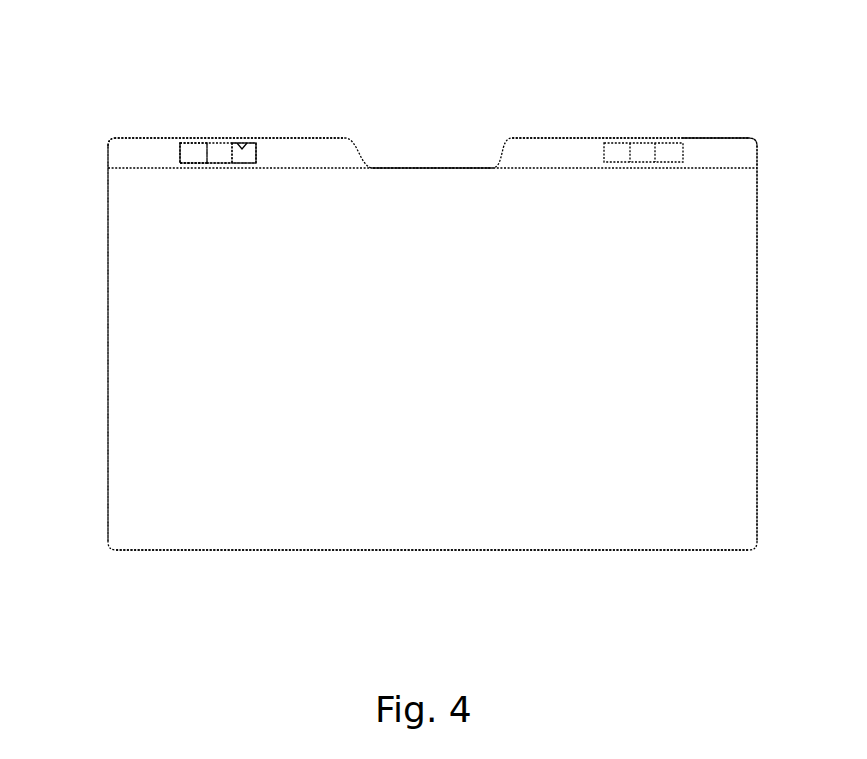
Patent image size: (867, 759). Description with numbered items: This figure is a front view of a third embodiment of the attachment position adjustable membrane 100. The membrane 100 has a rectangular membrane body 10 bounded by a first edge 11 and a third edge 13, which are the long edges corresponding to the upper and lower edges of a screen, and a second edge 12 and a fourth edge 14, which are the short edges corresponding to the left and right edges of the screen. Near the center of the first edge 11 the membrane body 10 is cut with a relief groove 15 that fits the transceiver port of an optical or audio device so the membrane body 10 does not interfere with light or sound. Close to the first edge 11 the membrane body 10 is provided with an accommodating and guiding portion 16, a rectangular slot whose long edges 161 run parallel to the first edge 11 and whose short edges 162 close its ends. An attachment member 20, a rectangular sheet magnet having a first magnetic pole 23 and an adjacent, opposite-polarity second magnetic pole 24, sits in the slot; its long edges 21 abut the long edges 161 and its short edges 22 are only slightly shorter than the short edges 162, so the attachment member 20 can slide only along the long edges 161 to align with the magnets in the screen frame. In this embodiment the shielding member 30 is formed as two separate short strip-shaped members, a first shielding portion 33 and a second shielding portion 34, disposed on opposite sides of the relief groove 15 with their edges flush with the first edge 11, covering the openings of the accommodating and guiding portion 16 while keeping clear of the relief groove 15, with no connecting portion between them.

The attachment position adjustable membrane 100 is at (440, 37).
The membrane body 10 is at (434, 477).
The first edge 11 is at (590, 147).
The second edge 12 is at (757, 315).
The third edge 13 is at (258, 550).
The fourth edge 14 is at (108, 383).
The relief groove 15 is at (430, 167).
The accommodating and guiding portion 16 is at (245, 142).
The long edges of accommodating and guiding portion 161 is at (232, 142).
The short edges of accommodating and guiding portion 162 is at (257, 156).
The attachment member 20 is at (218, 142).
The long edges of attachment member 21 is at (206, 142).
The short edges of attachment member 22 is at (178, 153).
The first magnetic pole 23 is at (193, 163).
The second magnetic pole 24 is at (222, 163).
The shielding member 30 is at (596, 148).
The first shielding portion 33 is at (121, 158).
The second shielding portion 34 is at (713, 150).